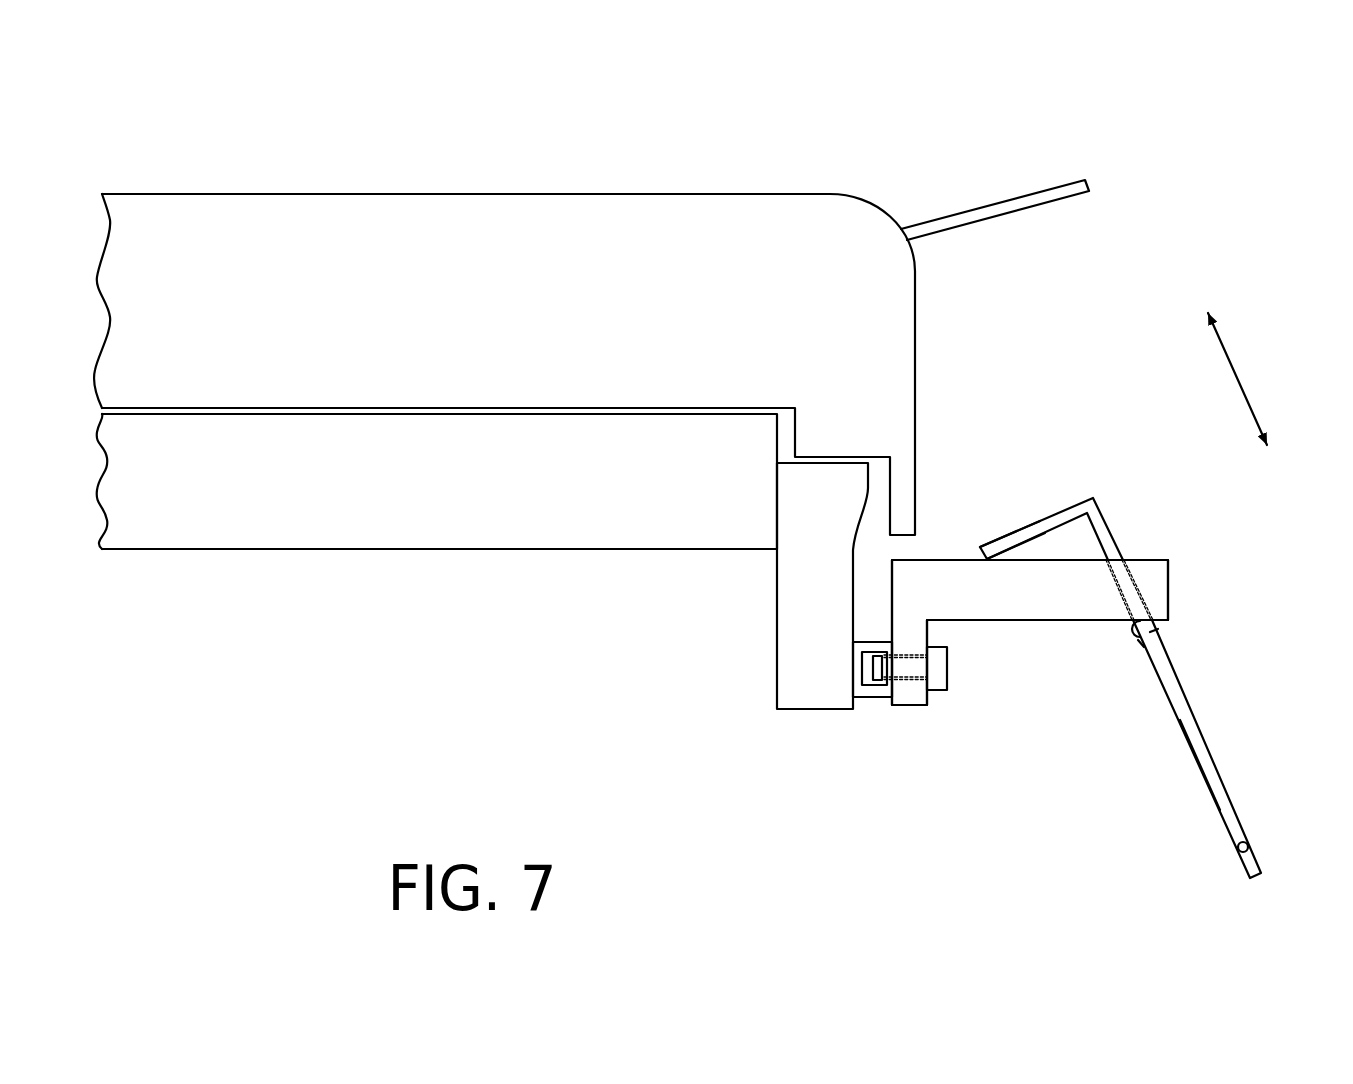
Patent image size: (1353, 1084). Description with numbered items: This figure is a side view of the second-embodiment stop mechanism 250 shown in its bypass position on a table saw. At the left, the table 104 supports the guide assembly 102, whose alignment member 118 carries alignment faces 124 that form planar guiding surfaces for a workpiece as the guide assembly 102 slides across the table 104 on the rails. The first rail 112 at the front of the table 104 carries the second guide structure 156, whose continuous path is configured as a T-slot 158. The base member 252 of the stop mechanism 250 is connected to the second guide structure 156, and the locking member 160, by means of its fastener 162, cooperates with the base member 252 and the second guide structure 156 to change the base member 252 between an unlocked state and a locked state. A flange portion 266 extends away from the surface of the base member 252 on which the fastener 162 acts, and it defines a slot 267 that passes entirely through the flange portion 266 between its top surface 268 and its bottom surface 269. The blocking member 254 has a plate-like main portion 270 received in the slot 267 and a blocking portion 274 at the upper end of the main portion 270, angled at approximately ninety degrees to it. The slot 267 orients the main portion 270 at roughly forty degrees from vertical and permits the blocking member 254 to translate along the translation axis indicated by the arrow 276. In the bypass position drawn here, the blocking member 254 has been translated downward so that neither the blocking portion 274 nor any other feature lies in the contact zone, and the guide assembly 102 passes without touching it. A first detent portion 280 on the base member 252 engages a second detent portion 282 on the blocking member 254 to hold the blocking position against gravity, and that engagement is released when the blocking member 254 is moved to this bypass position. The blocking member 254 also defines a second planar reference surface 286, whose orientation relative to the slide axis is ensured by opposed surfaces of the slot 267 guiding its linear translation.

The guide assembly 102 is at (504, 308).
The table 104 is at (251, 552).
The first rail 112 is at (776, 620).
The alignment member 118 is at (703, 192).
The alignment face 124 is at (848, 242).
The second guide structure 156 is at (870, 698).
The T-slot 158 is at (862, 665).
The locking member 160 is at (938, 693).
The fastener 162 is at (948, 667).
The stop mechanism 250 is at (1083, 658).
The base member 252 is at (903, 705).
The blocking member 254 is at (1205, 742).
The flange portion 266 is at (952, 558).
The slot 267 is at (1142, 592).
The top surface 268 is at (1153, 560).
The bottom surface 269 is at (1067, 622).
The main portion 270 is at (1182, 692).
The blocking portion 274 is at (1070, 502).
The arrow 276 is at (1228, 358).
The first detent portion 280 is at (1155, 633).
The second detent portion 282 is at (1248, 842).
The second planar reference surface 286 is at (1022, 537).